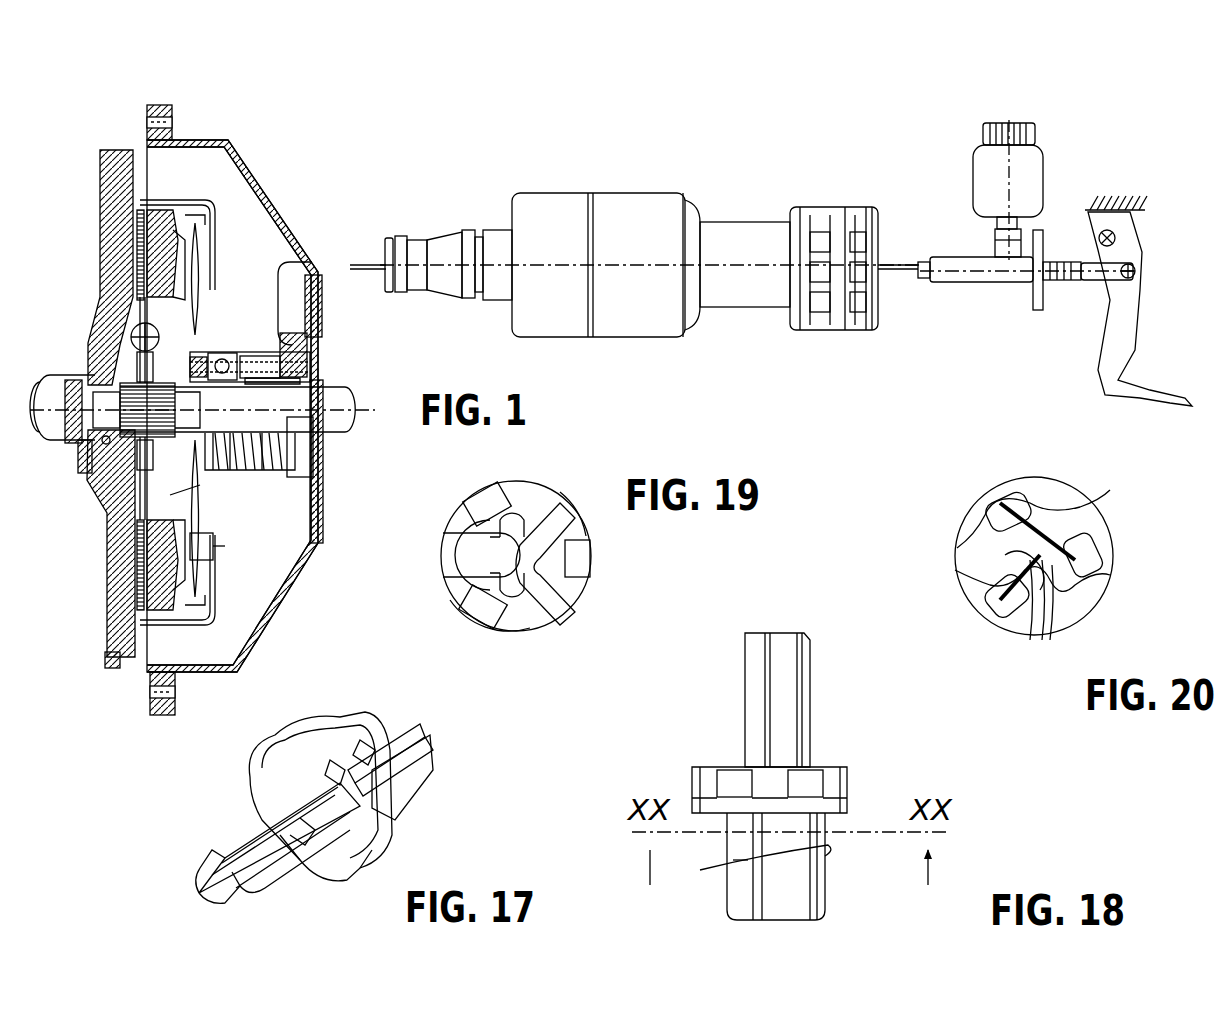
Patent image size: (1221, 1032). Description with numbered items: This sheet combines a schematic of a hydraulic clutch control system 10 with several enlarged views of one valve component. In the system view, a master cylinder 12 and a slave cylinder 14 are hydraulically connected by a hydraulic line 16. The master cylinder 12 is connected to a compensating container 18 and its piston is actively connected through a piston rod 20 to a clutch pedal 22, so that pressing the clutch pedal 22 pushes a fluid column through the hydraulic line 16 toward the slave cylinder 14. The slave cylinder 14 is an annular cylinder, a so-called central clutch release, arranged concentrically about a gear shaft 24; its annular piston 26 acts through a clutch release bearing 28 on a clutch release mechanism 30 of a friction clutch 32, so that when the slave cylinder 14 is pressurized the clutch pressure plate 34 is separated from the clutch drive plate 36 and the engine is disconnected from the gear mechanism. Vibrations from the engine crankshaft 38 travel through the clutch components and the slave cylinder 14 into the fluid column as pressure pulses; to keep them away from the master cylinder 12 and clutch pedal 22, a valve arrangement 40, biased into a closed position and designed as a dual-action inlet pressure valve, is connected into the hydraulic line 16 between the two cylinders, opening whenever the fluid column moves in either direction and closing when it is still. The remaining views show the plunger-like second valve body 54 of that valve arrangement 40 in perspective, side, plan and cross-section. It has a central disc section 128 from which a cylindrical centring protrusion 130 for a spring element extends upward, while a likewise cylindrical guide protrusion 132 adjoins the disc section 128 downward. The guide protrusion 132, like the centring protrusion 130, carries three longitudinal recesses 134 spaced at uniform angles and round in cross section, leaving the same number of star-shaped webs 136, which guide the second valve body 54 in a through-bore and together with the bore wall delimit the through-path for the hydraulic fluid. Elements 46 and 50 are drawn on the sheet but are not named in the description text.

In FIG. 1, the hydraulic clutch control system 10 is at (300, 160).
In FIG. 1, the master cylinder 12 is at (968, 285).
In FIG. 1, the slave cylinder 14 is at (297, 458).
In FIG. 1, the hydraulic line 16 is at (328, 262).
In FIG. 1, the compensating container 18 is at (1020, 165).
In FIG. 1, the piston rod 20 is at (1098, 278).
In FIG. 1, the clutch pedal 22 is at (1125, 315).
In FIG. 1, the gear shaft 24 is at (335, 432).
In FIG. 1, the annular piston 26 is at (245, 355).
In FIG. 1, the clutch release bearing 28 is at (208, 352).
In FIG. 1, the clutch release mechanism 30 is at (215, 505).
In FIG. 1, the friction clutch 32 is at (190, 185).
In FIG. 1, the clutch pressure plate 34 is at (160, 212).
In FIG. 1, the clutch drive plate 36 is at (100, 258).
In FIG. 1, the crankshaft 38 is at (62, 445).
In FIG. 1, the valve arrangement 40 is at (660, 253).
In FIG. 1, the housing end cap 46 is at (820, 218).
In FIG. 1, the slave piston connector 50 is at (422, 243).
In FIG. 19, the second valve body 54 is at (442, 592).
In FIG. 20, the second valve body 54 is at (955, 522).
In FIG. 17, the second valve body 54 is at (323, 809).
In FIG. 18, the second valve body 54 is at (766, 806).
In FIG. 19, the disc section 128 is at (513, 612).
In FIG. 20, the disc section 128 is at (1010, 622).
In FIG. 17, the disc section 128 is at (368, 800).
In FIG. 18, the disc section 128 is at (705, 785).
In FIG. 19, the centring protrusion 130 is at (503, 550).
In FIG. 17, the centring protrusion 130 is at (268, 868).
In FIG. 18, the centring protrusion 130 is at (778, 672).
In FIG. 20, the guide protrusion 132 is at (1055, 520).
In FIG. 17, the guide protrusion 132 is at (402, 735).
In FIG. 18, the guide protrusion 132 is at (780, 890).
In FIG. 20, the recesses 134 is at (1035, 640).
In FIG. 17, the recesses 134 is at (400, 775).
In FIG. 18, the recesses 134 is at (792, 900).
In FIG. 20, the webs 136 is at (985, 580).
In FIG. 17, the webs 136 is at (360, 740).
In FIG. 18, the webs 136 is at (745, 880).